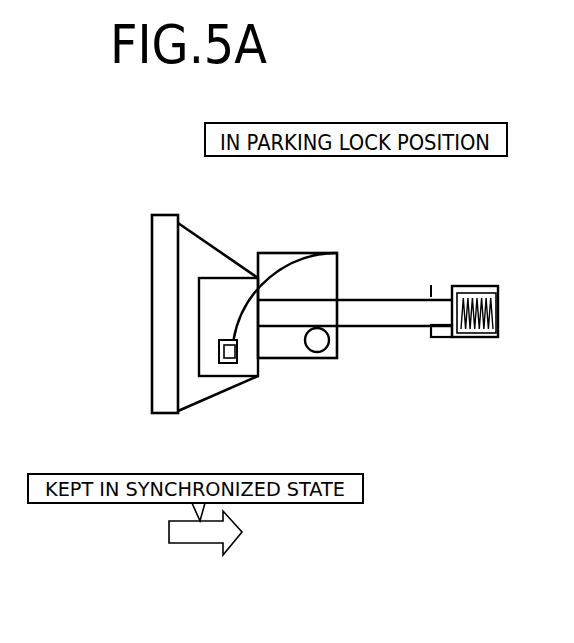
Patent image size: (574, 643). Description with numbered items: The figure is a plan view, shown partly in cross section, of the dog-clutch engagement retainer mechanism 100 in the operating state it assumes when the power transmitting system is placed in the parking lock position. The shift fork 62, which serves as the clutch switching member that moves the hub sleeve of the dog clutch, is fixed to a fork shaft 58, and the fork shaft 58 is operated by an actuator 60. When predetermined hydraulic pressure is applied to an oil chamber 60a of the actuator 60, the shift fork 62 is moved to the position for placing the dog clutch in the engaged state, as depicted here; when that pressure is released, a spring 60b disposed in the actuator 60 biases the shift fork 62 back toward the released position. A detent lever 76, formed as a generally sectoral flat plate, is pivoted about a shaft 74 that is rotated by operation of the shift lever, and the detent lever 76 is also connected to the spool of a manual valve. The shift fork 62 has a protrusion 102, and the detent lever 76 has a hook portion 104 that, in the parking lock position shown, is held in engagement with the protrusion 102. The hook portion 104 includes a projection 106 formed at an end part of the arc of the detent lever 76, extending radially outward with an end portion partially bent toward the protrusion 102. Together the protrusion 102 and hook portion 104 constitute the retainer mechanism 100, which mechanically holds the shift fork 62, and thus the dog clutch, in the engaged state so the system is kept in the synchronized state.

The fork shaft 58 is at (413, 305).
The actuator 60 is at (484, 305).
The oil chamber 60a is at (443, 333).
The spring 60b is at (478, 333).
The shift fork 62 is at (197, 250).
The shaft 74 is at (318, 345).
The detent lever 76 is at (313, 265).
The dog-clutch engagement retainer mechanism 100 is at (210, 367).
The protrusion 102 is at (233, 364).
The hook portion 104 is at (215, 358).
The projection 106 is at (219, 350).